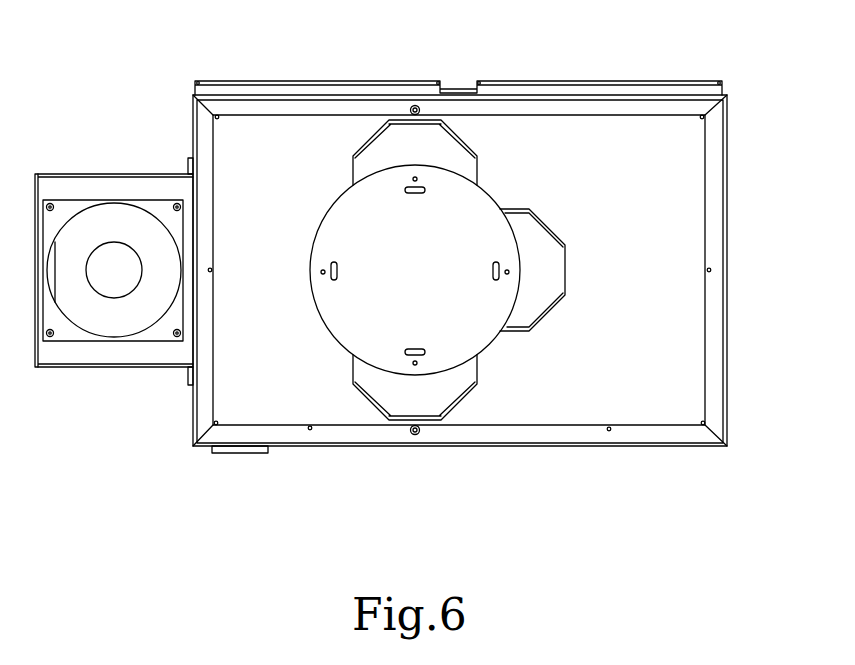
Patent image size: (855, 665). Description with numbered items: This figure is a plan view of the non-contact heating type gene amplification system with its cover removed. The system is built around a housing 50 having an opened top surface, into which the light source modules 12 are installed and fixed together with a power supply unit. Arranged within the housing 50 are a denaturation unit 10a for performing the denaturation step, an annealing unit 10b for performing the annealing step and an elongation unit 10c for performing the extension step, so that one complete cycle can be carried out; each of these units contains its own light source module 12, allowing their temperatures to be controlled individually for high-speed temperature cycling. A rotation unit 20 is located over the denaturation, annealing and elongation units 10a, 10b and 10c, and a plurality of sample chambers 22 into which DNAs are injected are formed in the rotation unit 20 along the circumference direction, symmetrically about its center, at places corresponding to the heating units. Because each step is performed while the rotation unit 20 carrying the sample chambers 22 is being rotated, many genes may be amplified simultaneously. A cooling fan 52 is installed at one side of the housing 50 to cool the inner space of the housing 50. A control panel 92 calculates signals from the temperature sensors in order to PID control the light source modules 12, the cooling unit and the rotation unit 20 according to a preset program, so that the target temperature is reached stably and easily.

The denaturation unit 10a is at (452, 140).
The annealing unit 10b is at (442, 387).
The elongation unit 10c is at (549, 240).
The light source module 12 is at (387, 148).
The rotation unit 20 is at (385, 345).
The sample chamber 22 is at (495, 290).
The housing 50 is at (727, 310).
The cooling fan 52 is at (110, 353).
The control panel 92 is at (243, 455).